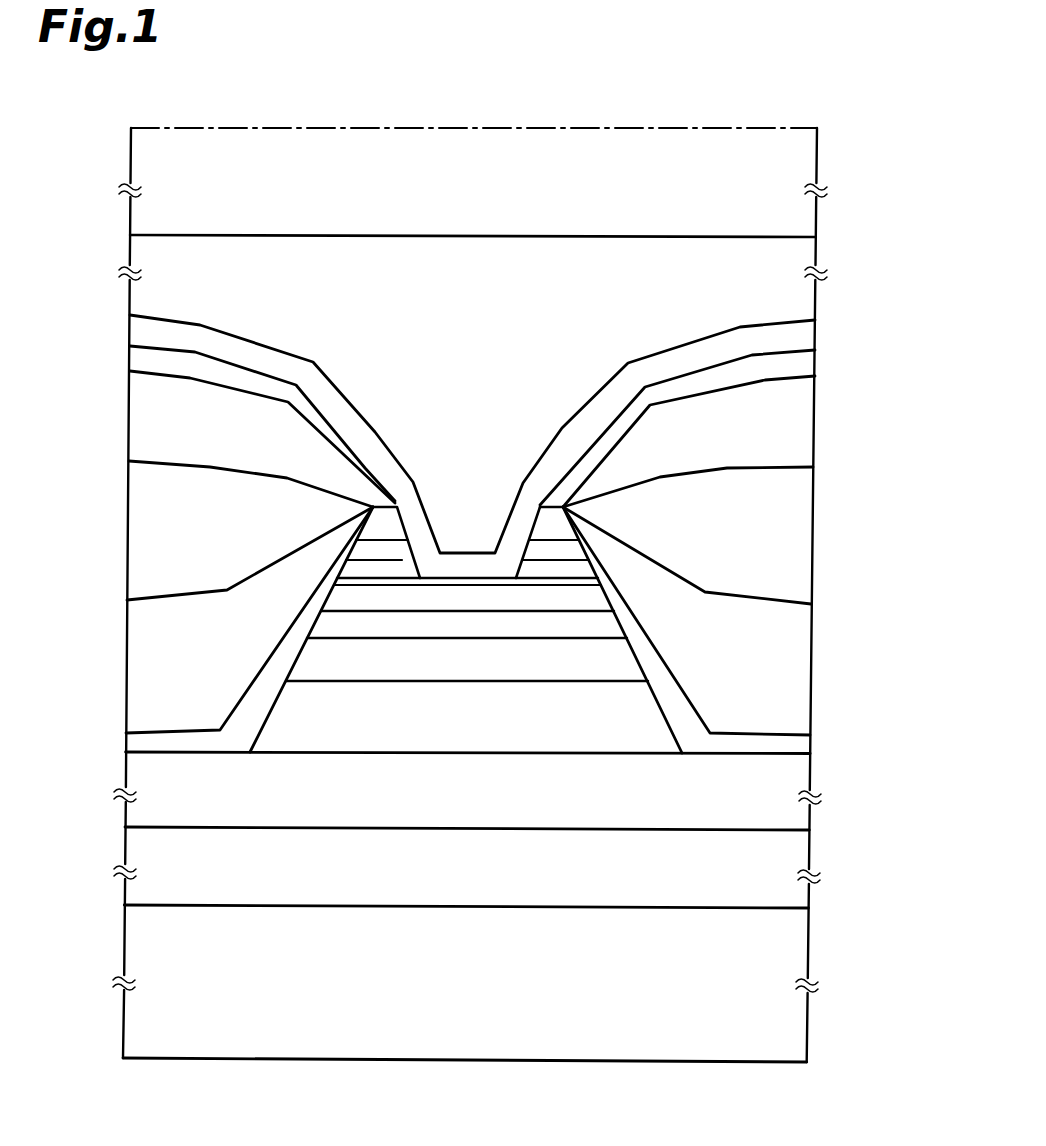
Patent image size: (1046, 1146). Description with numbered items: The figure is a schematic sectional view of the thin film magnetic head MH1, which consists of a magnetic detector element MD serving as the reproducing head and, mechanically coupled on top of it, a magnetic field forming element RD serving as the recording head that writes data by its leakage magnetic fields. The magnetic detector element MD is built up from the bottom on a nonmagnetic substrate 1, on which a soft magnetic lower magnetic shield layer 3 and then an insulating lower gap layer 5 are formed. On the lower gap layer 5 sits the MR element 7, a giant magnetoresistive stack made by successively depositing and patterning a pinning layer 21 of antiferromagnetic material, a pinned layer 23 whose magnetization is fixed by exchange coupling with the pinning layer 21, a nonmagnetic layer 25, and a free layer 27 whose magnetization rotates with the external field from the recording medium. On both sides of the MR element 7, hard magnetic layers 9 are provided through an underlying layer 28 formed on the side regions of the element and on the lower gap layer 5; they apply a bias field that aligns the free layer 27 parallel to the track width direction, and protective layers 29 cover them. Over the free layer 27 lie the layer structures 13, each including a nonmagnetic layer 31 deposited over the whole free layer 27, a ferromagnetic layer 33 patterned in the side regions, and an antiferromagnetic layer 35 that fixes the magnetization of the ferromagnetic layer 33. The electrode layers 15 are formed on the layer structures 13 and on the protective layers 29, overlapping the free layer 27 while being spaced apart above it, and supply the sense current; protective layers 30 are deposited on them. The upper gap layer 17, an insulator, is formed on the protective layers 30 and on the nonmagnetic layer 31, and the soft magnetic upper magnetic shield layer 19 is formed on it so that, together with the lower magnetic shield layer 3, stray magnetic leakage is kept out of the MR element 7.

The nonmagnetic substrate 1 is at (807, 1023).
The lower magnetic shield layer 3 is at (808, 887).
The lower gap layer 5 is at (809, 812).
The MR element 7 is at (868, 593).
The hard magnetic layers 9 is at (128, 700).
The layer structures 13 is at (866, 433).
The electrode layers 15 is at (129, 413).
The upper gap layer 17 is at (814, 330).
The upper magnetic shield layer 19 is at (816, 250).
The pinning layer 21 is at (663, 710).
The pinned layer 23 is at (643, 662).
The nonmagnetic layer 25 is at (625, 625).
The free layer 27 is at (620, 600).
The underlying layer 28 is at (129, 735).
The protective layers 29 is at (129, 530).
The protective layers 30 is at (129, 354).
The nonmagnetic layer 31 is at (338, 576).
The ferromagnetic layers 33 is at (348, 556).
The antiferromagnetic layers 35 is at (356, 526).
The thin film magnetic head MH1 is at (738, 99).
The magnetic field forming element RD is at (569, 127).
The magnetic detector element MD is at (75, 1058).